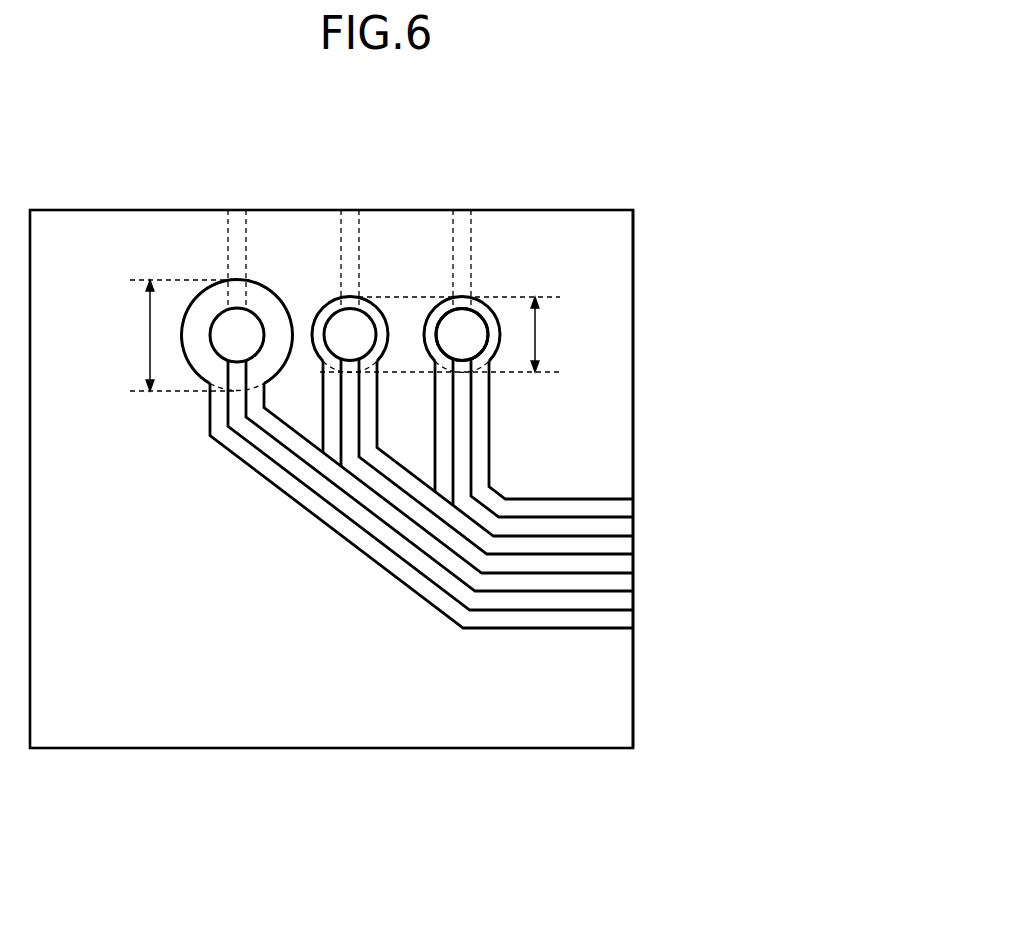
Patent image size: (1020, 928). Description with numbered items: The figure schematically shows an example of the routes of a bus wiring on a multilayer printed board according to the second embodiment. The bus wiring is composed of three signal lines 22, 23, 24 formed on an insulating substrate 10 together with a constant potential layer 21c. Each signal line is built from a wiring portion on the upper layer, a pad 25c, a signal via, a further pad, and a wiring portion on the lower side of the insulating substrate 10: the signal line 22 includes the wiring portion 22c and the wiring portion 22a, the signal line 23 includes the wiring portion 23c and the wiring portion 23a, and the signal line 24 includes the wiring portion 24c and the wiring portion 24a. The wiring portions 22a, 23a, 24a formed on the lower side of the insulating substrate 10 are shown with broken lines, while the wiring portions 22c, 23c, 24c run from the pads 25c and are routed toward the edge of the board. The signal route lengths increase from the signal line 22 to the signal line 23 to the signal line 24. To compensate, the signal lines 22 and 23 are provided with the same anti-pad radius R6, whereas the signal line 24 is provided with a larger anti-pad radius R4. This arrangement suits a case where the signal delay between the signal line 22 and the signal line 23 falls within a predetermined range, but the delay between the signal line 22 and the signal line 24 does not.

The insulating substrate 10 is at (80, 750).
The constant potential layer 21c is at (622, 661).
The signal line 22 is at (397, 167).
The wiring portion 22a is at (462, 222).
The wiring portion 22c is at (463, 415).
The signal line 23 is at (283, 167).
The wiring portion 23a is at (349, 222).
The wiring portion 23c is at (350, 414).
The signal line 24 is at (170, 167).
The wiring portion 24a is at (236, 222).
The wiring portion 24c is at (238, 414).
The pad 25c is at (466, 345).
The anti-pad radius R4 is at (184, 335).
The anti-pad radius R6 is at (445, 334).